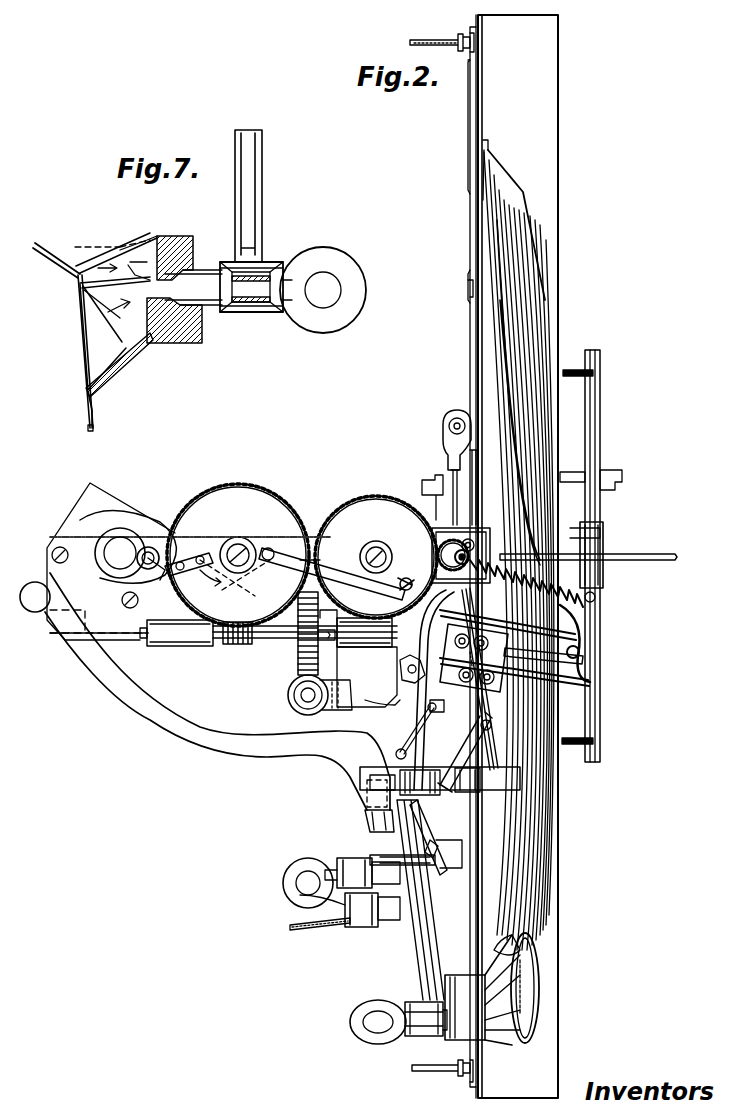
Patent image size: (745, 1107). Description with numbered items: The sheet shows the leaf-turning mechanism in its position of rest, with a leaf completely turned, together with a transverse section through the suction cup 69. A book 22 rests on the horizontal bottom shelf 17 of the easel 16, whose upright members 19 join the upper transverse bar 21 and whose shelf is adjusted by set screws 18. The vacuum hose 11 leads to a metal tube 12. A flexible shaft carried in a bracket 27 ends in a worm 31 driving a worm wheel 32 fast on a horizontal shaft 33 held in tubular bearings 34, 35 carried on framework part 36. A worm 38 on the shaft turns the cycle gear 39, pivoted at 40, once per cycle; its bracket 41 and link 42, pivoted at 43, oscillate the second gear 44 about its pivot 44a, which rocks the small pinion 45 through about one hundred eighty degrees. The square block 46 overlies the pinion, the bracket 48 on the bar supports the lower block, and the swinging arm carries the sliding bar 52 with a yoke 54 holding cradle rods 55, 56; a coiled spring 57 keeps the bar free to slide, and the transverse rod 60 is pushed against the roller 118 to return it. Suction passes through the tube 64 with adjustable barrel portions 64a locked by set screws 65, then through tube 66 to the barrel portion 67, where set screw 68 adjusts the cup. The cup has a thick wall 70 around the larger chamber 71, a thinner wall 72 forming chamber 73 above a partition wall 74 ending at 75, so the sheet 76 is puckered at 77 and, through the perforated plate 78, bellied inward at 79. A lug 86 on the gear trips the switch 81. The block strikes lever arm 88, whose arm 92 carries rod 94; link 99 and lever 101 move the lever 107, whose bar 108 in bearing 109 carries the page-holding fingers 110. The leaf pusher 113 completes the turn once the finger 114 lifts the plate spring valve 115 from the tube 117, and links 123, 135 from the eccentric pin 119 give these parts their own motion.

In FIG. 2, the vacuum hose 11 is at (226, 742).
In FIG. 2, the metal tube 12 is at (372, 848).
In FIG. 2, the book easel 16 is at (470, 203).
In FIG. 2, the bottom shelf 17 is at (552, 84).
In FIG. 2, the set screws 18 is at (439, 36).
In FIG. 2, the upright members 19 is at (472, 48).
In FIG. 2, the upper transverse bar 21 is at (484, 100).
In FIG. 2, the book 22 is at (495, 265).
In FIG. 2, the bracket 27 is at (405, 698).
In FIG. 2, the worm 31 is at (287, 711).
In FIG. 2, the worm wheel 32 is at (290, 650).
In FIG. 2, the horizontal shaft 33 is at (262, 644).
In FIG. 2, the tubular bearing 34 is at (170, 645).
In FIG. 2, the tubular bearing 35 is at (350, 645).
In FIG. 2, the framework part 36 is at (45, 633).
In FIG. 2, the worm 38 is at (222, 642).
In FIG. 2, the cycle gear 39 is at (238, 484).
In FIG. 2, the pivot 40 is at (237, 545).
In FIG. 2, the bracket 41 is at (270, 541).
In FIG. 2, the link 42 is at (330, 572).
In FIG. 2, the pivot 43 is at (405, 563).
In FIG. 2, the second gear 44 is at (373, 497).
In FIG. 2, the pivot 44a is at (373, 542).
In FIG. 2, the pinion 45 is at (425, 495).
In FIG. 2, the square block 46 is at (483, 528).
In FIG. 2, the bracket 48 is at (598, 532).
In FIG. 2, the sliding bar 52 is at (582, 656).
In FIG. 2, the yoke 54 is at (395, 670).
In FIG. 2, the cradle rod 55 is at (592, 680).
In FIG. 2, the cradle rod 56 is at (572, 622).
In FIG. 2, the coiled spring 57 is at (592, 597).
In FIG. 2, the transverse rod 60 is at (446, 748).
In FIG. 2, the metallic tube 64 is at (310, 905).
In FIG. 2, the head or barrel portion 64a is at (340, 855).
In FIG. 2, the set screw 65 is at (284, 886).
In FIG. 2, the tube 66 is at (426, 955).
In FIG. 7, the barrel portion 67 is at (254, 316).
In FIG. 2, the barrel portion 67 is at (422, 1032).
In FIG. 7, the set screw 68 is at (358, 303).
In FIG. 2, the set screw 68 is at (358, 1032).
In FIG. 7, the suction cup 69 is at (150, 352).
In FIG. 2, the suction cup 69 is at (540, 1042).
In FIG. 7, the thick wall 70 is at (108, 382).
In FIG. 2, the thick wall 70 is at (540, 955).
In FIG. 7, the larger chamber 71 is at (92, 352).
In FIG. 7, the thinner wall 72 is at (100, 262).
In FIG. 2, the thinner wall 72 is at (512, 988).
In FIG. 7, the chamber 73 is at (145, 263).
In FIG. 7, the partition wall 74 is at (132, 272).
In FIG. 7, the inner end of partition wall 75 is at (146, 340).
In FIG. 7, the sheet 76 is at (88, 428).
In FIG. 7, the puckered portion 77 is at (76, 273).
In FIG. 7, the perforated plate 78 is at (107, 291).
In FIG. 7, the inwardly bellying portion 79 is at (78, 322).
In FIG. 2, the switch 81 is at (152, 545).
In FIG. 2, the lug 86 is at (165, 590).
In FIG. 2, the lever arm 88 is at (440, 455).
In FIG. 2, the upper arm 92 is at (443, 438).
In FIG. 2, the second upright rod 94 is at (457, 418).
In FIG. 2, the link 99 is at (476, 470).
In FIG. 2, the lever 101 is at (580, 473).
In FIG. 2, the lever 107 is at (610, 487).
In FIG. 2, the horizontal bar 108 is at (600, 425).
In FIG. 2, the bearing 109 is at (604, 572).
In FIG. 2, the page-holding fingers 110 is at (575, 372).
In FIG. 2, the leaf pusher 113 is at (485, 700).
In FIG. 2, the finger 114 is at (645, 553).
In FIG. 2, the plate spring valve 115 is at (448, 878).
In FIG. 2, the tube 117 is at (428, 870).
In FIG. 2, the roller 118 is at (406, 731).
In FIG. 2, the stationary pin 119 is at (485, 553).
In FIG. 2, the longer link 123 is at (492, 632).
In FIG. 2, the link 135 is at (494, 604).